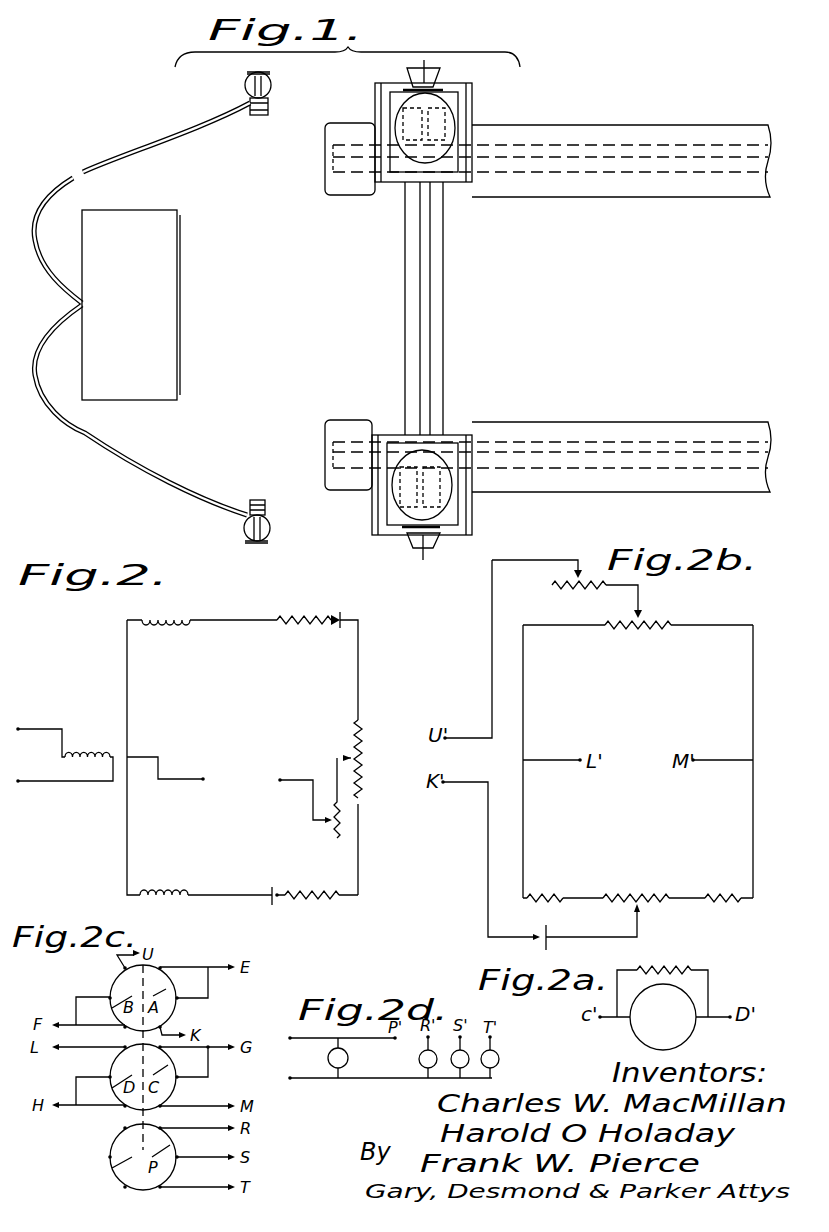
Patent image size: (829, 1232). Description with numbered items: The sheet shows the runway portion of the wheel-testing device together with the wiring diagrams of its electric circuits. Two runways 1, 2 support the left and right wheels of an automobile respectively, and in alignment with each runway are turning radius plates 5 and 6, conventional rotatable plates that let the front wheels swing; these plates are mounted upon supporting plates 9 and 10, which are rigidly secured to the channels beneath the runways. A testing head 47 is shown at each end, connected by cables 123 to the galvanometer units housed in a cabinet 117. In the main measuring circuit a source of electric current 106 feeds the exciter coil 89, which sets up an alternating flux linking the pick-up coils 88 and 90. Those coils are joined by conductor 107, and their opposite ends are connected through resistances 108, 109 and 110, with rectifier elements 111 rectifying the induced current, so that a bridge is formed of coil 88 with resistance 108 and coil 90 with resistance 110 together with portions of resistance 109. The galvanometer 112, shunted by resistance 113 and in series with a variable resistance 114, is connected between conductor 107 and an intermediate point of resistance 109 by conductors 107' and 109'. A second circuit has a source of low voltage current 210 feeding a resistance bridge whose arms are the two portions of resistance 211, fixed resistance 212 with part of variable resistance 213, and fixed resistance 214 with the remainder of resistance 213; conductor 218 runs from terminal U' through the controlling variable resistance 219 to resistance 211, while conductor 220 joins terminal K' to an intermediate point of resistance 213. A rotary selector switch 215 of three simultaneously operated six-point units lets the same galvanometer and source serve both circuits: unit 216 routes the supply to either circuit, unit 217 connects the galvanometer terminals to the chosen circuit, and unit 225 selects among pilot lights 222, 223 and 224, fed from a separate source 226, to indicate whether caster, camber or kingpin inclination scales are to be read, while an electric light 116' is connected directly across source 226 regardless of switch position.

In FIG. 1, the runway 1 is at (633, 422).
In FIG. 1, the runway 2 is at (625, 125).
In FIG. 1, the turning radius plate 5 is at (388, 492).
In FIG. 1, the turning radius plate 6 is at (392, 123).
In FIG. 1, the supporting plate 9 is at (467, 508).
In FIG. 1, the supporting plate 10 is at (472, 108).
In FIG. 1, the testing head 47 is at (236, 88).
In FIG. 2, the pick-up coil 88 is at (180, 628).
In FIG. 2, the exciter coil 89 is at (93, 762).
In FIG. 2, the pick-up coil 90 is at (187, 867).
In FIG. 2, the source of electric current 106 is at (63, 757).
In FIG. 2, the conductor 107 is at (166, 745).
In FIG. 2, the conductor 107' is at (203, 757).
In FIG. 2, the resistance 108 is at (312, 628).
In FIG. 2, the resistance 109 is at (325, 750).
In FIG. 2, the conductor 109' is at (301, 780).
In FIG. 2, the resistance 110 is at (321, 880).
In FIG. 2, the rectifier element 111 is at (343, 612).
In FIG. 2A, the galvanometer 112 is at (694, 1037).
In FIG. 2A, the shunt resistance 113 is at (680, 964).
In FIG. 2, the variable resistance 114 is at (331, 833).
In FIG. 2D, the electric light 116' is at (367, 1058).
In FIG. 1, the cabinet 117 is at (152, 277).
In FIG. 1, the cable 123 is at (155, 148).
In FIG. 2B, the source of low voltage current 210 is at (431, 759).
In FIG. 2B, the resistance 211 is at (627, 633).
In FIG. 2B, the fixed resistance 212 is at (725, 902).
In FIG. 2B, the variable resistance 213 is at (625, 895).
In FIG. 2B, the fixed resistance 214 is at (551, 895).
In FIG. 2C, the rotary selector switch 215 is at (222, 1010).
In FIG. 2C, the switch unit 216 is at (142, 975).
In FIG. 2C, the switch unit 217 is at (155, 1064).
In FIG. 2B, the conductor 218 is at (492, 630).
In FIG. 2B, the variable resistance 219 is at (600, 546).
In FIG. 2B, the conductor 220 is at (488, 854).
In FIG. 2D, the pilot light 222 is at (433, 1051).
In FIG. 2D, the pilot light 223 is at (465, 1051).
In FIG. 2D, the pilot light 224 is at (497, 1051).
In FIG. 2C, the switch unit 225 is at (122, 1142).
In FIG. 2D, the source of electric current 226 is at (299, 1059).